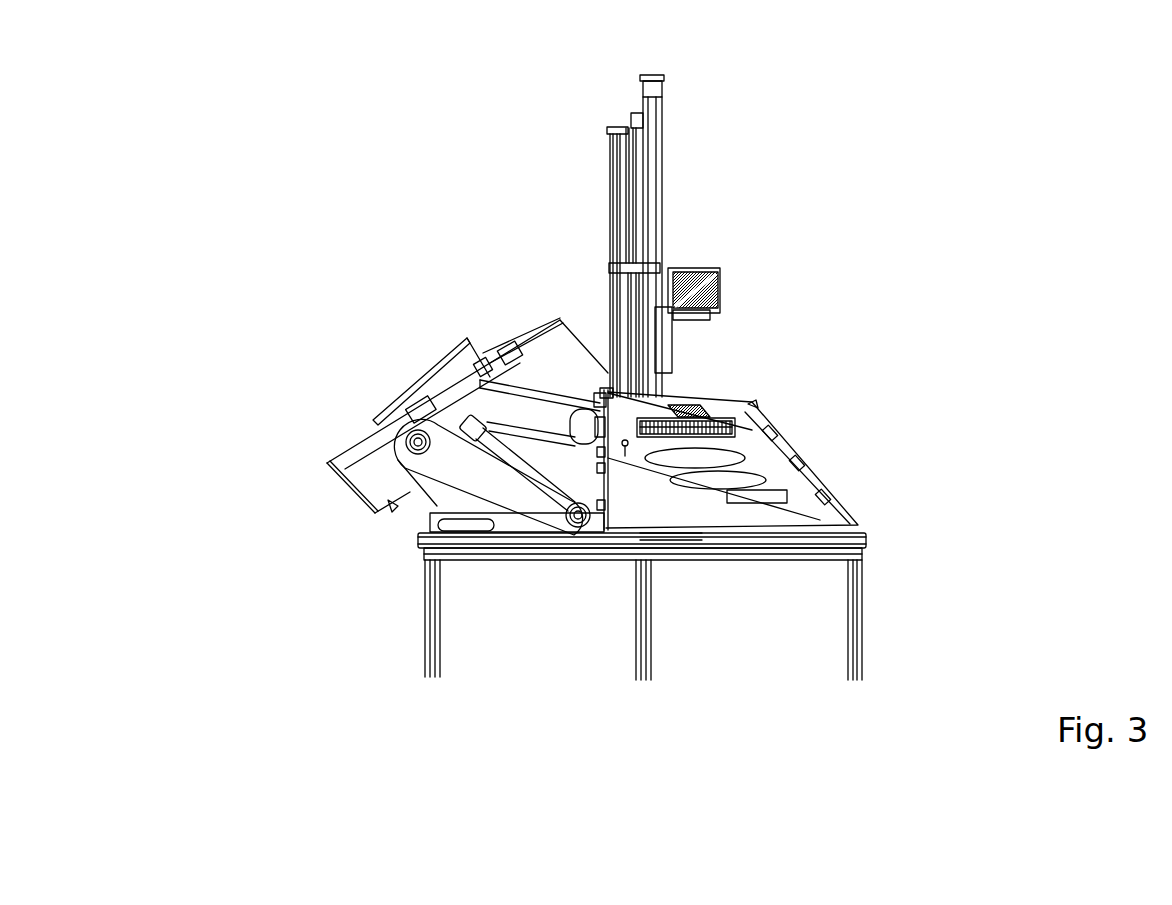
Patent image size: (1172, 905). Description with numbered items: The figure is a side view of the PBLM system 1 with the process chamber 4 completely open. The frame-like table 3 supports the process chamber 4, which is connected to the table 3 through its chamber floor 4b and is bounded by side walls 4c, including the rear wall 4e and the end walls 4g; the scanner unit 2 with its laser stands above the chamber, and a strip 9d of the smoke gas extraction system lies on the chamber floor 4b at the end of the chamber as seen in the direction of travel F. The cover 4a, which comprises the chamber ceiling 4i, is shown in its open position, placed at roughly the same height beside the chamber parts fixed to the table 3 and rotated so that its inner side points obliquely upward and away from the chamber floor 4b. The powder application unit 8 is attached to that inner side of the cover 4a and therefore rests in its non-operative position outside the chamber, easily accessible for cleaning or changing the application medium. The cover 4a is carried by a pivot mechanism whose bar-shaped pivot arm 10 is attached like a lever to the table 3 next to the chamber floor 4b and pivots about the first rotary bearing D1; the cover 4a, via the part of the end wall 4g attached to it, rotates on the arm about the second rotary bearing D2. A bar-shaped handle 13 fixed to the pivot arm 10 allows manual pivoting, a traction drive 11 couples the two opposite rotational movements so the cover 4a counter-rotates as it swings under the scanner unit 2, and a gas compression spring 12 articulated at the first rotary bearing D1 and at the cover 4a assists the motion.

The PBLM system 1 is at (880, 294).
The scanner unit 2 is at (700, 238).
The table 3 is at (847, 523).
The process chamber 4 is at (563, 507).
The cover 4a is at (354, 437).
The chamber floor 4b is at (767, 470).
The side walls 4c is at (510, 577).
The rear wall 4e is at (582, 397).
The end walls 4g is at (645, 390).
The chamber ceiling 4i is at (390, 509).
The powder application unit 8 is at (395, 372).
The strip 9d is at (752, 406).
The pivot arm 10 is at (563, 322).
The traction drive 11 is at (451, 411).
The gas compression spring 12 is at (515, 472).
The handle 13 is at (512, 527).
The first rotary bearing D1 is at (580, 530).
The second rotary bearing D2 is at (395, 459).
The direction of travel F is at (632, 447).